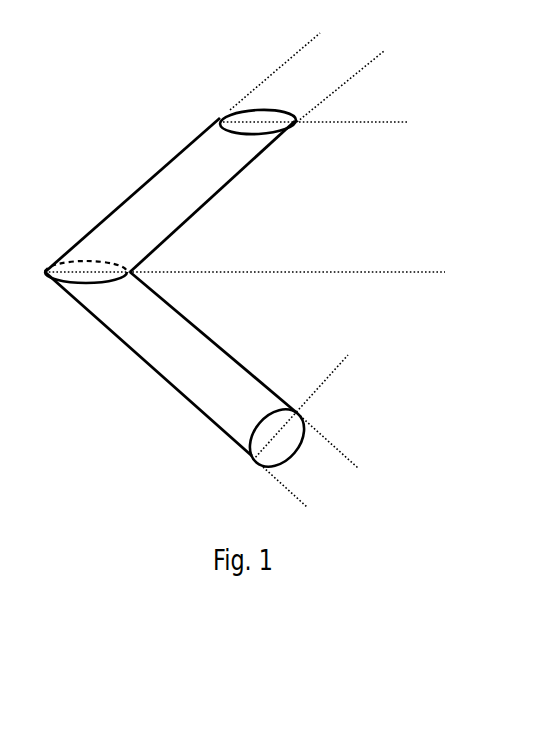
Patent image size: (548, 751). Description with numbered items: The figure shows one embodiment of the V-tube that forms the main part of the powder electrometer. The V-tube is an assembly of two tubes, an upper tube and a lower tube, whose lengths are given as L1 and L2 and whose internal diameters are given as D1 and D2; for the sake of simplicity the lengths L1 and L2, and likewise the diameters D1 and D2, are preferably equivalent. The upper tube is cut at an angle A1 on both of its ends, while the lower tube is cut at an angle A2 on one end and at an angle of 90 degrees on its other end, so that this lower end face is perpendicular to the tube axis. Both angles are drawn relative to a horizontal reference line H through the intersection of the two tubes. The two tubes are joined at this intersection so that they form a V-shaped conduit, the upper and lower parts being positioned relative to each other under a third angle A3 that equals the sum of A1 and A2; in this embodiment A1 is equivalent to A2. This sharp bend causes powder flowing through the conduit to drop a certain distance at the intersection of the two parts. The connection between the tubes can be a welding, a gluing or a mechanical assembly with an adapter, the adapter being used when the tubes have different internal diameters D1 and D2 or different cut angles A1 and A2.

The length of the upper tube L1 is at (300, 135).
The length of the lower tube L2 is at (293, 403).
The internal diameter of the upper tube D1 is at (345, 78).
The internal diameter of the lower tube D2 is at (324, 450).
The cut angle of the upper tube A1 is at (373, 65).
The cut angle of the lower tube A2 is at (265, 285).
The V-shape angle between the tubes A3 is at (302, 398).
The horizontal reference line H is at (245, 256).
The ninety-degree cut angle 90 is at (340, 375).